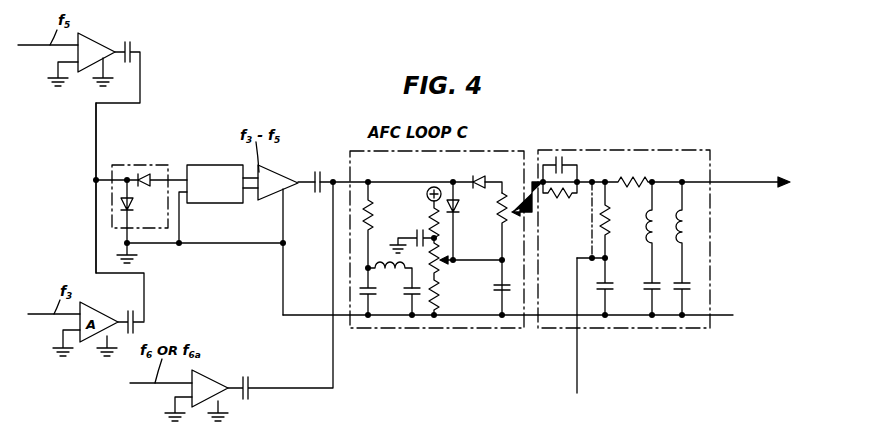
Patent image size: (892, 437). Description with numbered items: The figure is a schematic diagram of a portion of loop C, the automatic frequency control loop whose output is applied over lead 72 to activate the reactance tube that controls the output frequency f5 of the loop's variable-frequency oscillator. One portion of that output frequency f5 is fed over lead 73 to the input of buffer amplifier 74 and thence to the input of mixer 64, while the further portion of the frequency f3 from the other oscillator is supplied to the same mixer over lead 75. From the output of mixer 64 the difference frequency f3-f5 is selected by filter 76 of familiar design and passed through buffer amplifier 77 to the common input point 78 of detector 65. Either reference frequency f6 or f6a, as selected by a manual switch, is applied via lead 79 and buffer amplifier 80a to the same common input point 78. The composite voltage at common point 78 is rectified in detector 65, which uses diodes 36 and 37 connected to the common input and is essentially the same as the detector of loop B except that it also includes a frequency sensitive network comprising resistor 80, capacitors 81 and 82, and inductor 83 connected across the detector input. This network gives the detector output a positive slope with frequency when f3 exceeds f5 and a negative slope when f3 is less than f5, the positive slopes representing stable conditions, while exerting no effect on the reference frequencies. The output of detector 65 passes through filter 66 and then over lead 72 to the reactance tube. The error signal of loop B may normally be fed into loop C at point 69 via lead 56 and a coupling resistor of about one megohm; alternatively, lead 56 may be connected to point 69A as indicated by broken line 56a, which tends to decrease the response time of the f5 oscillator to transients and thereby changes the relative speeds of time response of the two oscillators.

The lead 73 is at (38, 45).
The buffer amplifier 74 is at (86, 39).
The lead 75 is at (38, 314).
The lead 79 is at (135, 383).
The buffer amplifier 80a is at (202, 378).
The mixer 64 is at (126, 157).
The filter 76 is at (212, 165).
The buffer amplifier 77 is at (271, 200).
The common input point 78 is at (322, 178).
The detector 65 is at (412, 329).
The resistor 80 is at (374, 220).
The capacitor 81 is at (360, 290).
The capacitor 82 is at (411, 294).
The inductor 83 is at (380, 260).
The diode 36 is at (482, 178).
The diode 37 is at (462, 212).
The filter 66 is at (635, 328).
The broken line connection 56a is at (592, 226).
The point 69 is at (612, 258).
The point 69A is at (596, 180).
The lead 56 is at (574, 372).
The lead 72 is at (735, 182).